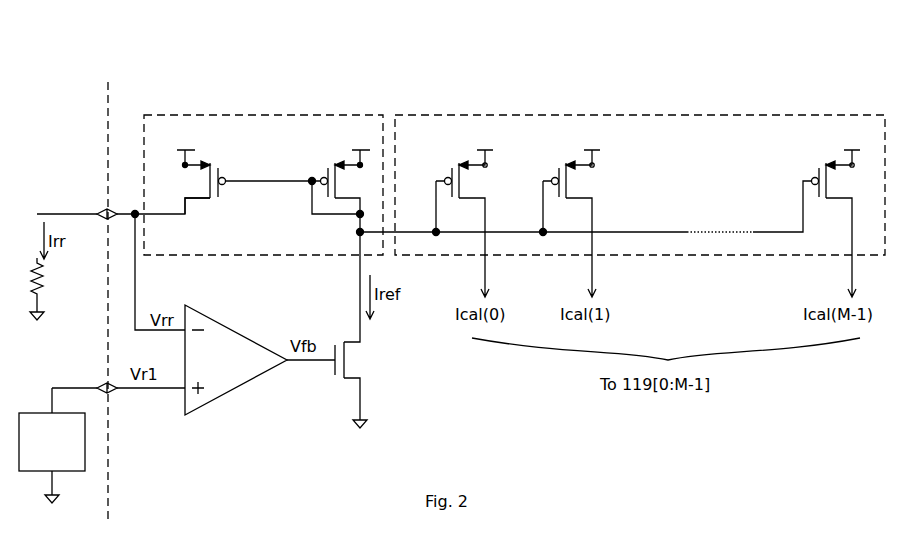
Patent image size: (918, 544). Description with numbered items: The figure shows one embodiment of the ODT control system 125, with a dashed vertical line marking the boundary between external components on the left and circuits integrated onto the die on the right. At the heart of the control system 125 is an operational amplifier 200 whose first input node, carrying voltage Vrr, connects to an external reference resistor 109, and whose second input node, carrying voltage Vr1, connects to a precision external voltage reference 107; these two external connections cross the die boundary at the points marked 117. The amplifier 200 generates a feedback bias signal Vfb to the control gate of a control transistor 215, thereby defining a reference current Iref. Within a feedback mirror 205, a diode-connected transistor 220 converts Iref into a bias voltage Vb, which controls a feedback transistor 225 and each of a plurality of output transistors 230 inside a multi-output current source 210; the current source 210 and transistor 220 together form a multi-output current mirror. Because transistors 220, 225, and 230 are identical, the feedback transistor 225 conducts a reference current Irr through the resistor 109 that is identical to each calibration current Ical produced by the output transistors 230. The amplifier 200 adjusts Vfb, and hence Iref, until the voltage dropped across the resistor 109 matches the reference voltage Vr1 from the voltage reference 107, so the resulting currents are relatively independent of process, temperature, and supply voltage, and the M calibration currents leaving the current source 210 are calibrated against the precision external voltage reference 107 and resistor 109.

The voltage reference 107 is at (52, 445).
The reference resistor 109 is at (43, 289).
The input connection 117 is at (104, 209).
The ODT control system 125 is at (736, 72).
The operational amplifier 200 is at (236, 360).
The feedback mirror 205 is at (263, 185).
The multi-output current source 210 is at (622, 206).
The control transistor 215 is at (348, 346).
The diode-connected transistor 220 is at (327, 170).
The feedback transistor 225 is at (225, 186).
The output transistors 230 is at (450, 170).